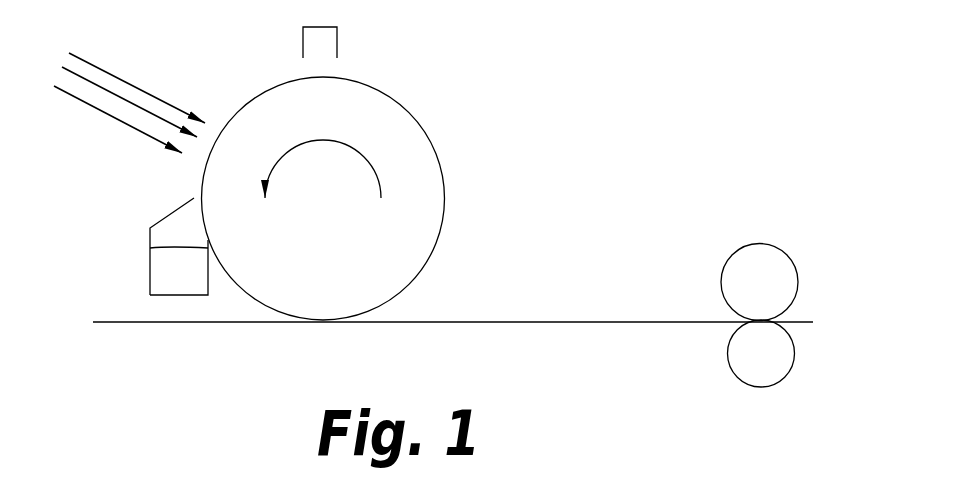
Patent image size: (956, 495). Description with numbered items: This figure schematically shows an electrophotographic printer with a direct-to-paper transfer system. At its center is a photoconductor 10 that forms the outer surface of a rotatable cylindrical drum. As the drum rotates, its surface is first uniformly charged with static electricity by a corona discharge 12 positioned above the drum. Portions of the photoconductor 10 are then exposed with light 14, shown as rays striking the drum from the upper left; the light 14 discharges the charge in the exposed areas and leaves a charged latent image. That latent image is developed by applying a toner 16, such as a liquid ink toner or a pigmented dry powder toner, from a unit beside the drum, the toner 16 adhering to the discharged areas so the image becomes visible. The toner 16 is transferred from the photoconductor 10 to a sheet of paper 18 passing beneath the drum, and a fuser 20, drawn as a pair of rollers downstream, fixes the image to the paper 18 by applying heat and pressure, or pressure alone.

The photoconductor 10 is at (440, 159).
The corona discharge 12 is at (337, 43).
The light 14 is at (63, 97).
The toner 16 is at (168, 270).
The sheet of paper 18 is at (540, 321).
The fuser 20 is at (775, 265).